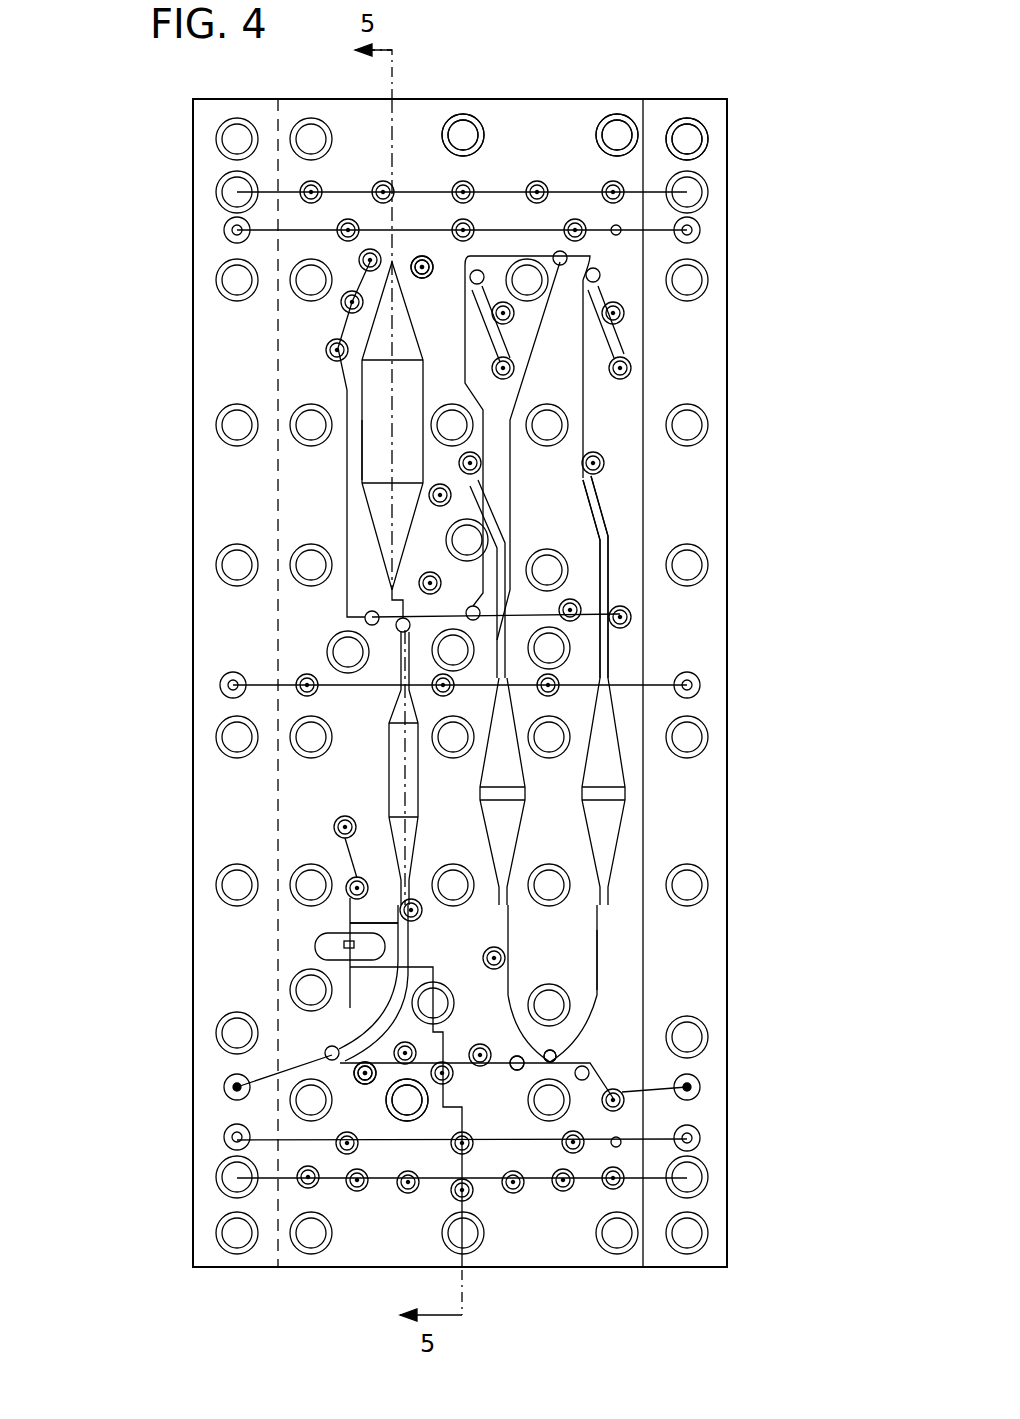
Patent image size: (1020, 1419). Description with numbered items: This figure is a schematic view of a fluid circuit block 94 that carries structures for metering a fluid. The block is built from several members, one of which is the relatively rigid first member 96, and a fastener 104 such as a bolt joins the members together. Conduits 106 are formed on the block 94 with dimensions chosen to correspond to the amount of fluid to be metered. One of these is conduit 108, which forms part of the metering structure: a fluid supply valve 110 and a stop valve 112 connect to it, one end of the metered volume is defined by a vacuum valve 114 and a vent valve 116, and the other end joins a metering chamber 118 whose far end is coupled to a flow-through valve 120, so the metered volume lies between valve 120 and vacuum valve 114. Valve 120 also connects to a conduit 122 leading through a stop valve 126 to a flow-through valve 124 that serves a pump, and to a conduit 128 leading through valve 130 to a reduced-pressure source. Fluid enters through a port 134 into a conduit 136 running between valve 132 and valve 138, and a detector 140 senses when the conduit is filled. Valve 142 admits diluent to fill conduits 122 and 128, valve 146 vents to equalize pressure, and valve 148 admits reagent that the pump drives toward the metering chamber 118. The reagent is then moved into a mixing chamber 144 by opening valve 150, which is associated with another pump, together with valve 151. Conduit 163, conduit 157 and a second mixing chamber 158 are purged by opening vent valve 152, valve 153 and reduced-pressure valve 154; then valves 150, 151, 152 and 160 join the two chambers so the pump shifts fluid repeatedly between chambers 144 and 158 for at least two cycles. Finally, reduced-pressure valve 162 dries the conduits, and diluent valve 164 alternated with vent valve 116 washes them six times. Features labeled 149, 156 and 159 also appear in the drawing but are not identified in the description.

The fluid circuit block 94 is at (172, 232).
The first member 96 is at (605, 1268).
The fastener 104 is at (481, 113).
The conduit 106 is at (632, 792).
The conduit 108 is at (348, 1010).
The fluid supply valve 110 is at (410, 1088).
The stop valve 112 is at (516, 1070).
The vacuum valve 114 is at (494, 970).
The vent valve 116 is at (482, 463).
The metering chamber 118 is at (383, 770).
The valve 120 is at (400, 632).
The conduit 122 is at (362, 483).
The valve 124 is at (342, 305).
The stop valve 126 is at (362, 618).
The conduit 128 is at (528, 642).
The valve 130 is at (631, 613).
The valve 132 is at (334, 825).
The port 134 is at (225, 1093).
The conduit 136 is at (325, 1055).
The valve 138 is at (333, 1064).
The detector 140 is at (315, 945).
The valve 142 is at (360, 258).
The mixing chamber 144 is at (482, 828).
The valve 146 is at (328, 350).
The valve 148 is at (420, 917).
The passage 149 is at (437, 350).
The valve 150 is at (453, 498).
The valve 151 is at (473, 268).
The valve 152 is at (605, 470).
The valve 153 is at (579, 1066).
The valve 154 is at (614, 1090).
The channel 156 is at (466, 378).
The conduit 157 is at (598, 962).
The mixing chamber 158 is at (588, 738).
The channel wall 159 is at (430, 540).
The valve 160 is at (550, 1063).
The valve 162 is at (365, 1062).
The conduit 163 is at (602, 512).
The valve 164 is at (512, 317).